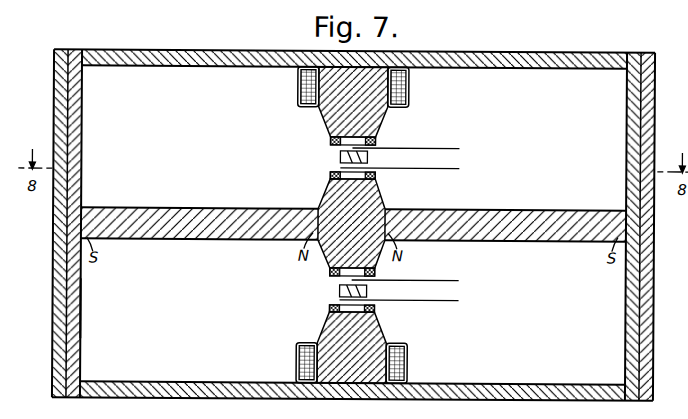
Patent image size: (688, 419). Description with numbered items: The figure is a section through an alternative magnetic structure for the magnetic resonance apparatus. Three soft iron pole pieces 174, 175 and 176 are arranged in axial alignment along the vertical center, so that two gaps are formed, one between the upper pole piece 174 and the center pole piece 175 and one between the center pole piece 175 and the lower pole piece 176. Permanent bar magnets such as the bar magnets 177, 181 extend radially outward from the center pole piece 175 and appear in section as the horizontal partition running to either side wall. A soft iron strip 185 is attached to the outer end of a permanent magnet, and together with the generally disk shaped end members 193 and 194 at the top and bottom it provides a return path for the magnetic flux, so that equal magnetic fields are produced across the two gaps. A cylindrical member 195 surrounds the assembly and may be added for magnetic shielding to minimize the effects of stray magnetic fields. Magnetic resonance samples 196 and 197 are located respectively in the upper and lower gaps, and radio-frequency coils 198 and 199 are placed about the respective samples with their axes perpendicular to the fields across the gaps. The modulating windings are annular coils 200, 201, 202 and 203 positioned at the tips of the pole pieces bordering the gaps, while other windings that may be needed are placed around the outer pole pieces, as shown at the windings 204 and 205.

The soft iron pole piece 174 is at (383, 118).
The center pole piece 175 is at (380, 194).
The soft iron pole piece 176 is at (375, 333).
The permanent bar magnet 177 is at (185, 241).
The permanent bar magnet 181 is at (524, 241).
The soft iron strip 185 is at (81, 310).
The disk shaped end member 193 is at (511, 51).
The disk shaped end member 194 is at (495, 386).
The cylindrical member 195 is at (52, 333).
The magnetic resonance sample 196 is at (367, 158).
The magnetic resonance sample 197 is at (368, 292).
The radio-frequency coil 198 is at (340, 153).
The radio-frequency coil 199 is at (340, 287).
The annular coil 200 is at (330, 140).
The annular coil 201 is at (330, 176).
The annular coil 202 is at (330, 273).
The annular coil 203 is at (330, 309).
The winding 204 is at (298, 88).
The winding 205 is at (298, 353).